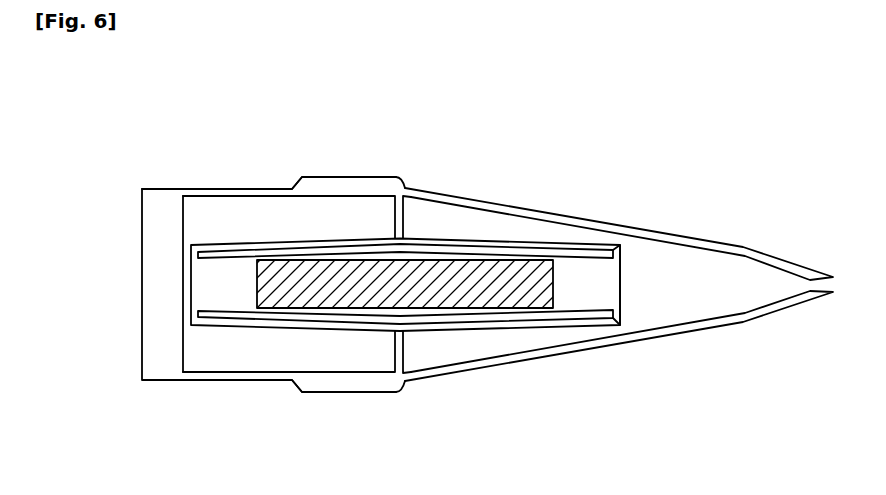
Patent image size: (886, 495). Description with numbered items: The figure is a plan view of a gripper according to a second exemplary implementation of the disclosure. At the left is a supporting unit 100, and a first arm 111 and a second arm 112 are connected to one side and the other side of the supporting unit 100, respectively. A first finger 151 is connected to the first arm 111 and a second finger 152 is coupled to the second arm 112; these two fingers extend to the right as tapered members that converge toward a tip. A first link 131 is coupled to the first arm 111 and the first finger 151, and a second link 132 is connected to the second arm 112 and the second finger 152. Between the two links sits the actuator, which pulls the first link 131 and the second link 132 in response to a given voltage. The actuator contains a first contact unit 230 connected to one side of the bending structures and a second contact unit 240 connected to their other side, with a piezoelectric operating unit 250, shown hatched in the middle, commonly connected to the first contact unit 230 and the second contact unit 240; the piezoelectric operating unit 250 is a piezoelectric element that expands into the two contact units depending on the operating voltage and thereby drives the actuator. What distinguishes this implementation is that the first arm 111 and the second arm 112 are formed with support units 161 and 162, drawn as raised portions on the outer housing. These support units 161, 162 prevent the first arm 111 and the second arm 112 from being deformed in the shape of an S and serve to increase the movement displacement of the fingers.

The supporting unit 100 is at (153, 303).
The first arm 111 is at (202, 195).
The second arm 112 is at (228, 373).
The first link 131 is at (398, 217).
The second link 132 is at (398, 345).
The first finger 151 is at (525, 213).
The second finger 152 is at (523, 355).
The support unit 161 is at (358, 190).
The support unit 162 is at (357, 382).
The first contact unit 230 is at (233, 285).
The second contact unit 240 is at (590, 285).
The piezoelectric operating unit 250 is at (315, 285).